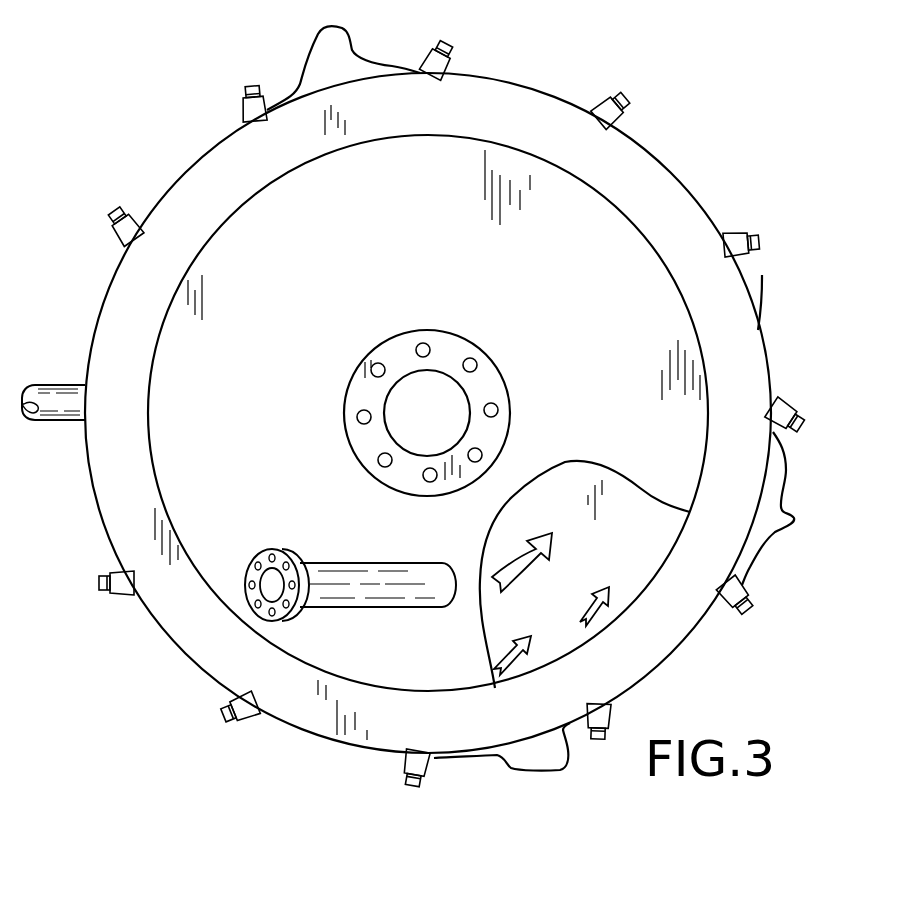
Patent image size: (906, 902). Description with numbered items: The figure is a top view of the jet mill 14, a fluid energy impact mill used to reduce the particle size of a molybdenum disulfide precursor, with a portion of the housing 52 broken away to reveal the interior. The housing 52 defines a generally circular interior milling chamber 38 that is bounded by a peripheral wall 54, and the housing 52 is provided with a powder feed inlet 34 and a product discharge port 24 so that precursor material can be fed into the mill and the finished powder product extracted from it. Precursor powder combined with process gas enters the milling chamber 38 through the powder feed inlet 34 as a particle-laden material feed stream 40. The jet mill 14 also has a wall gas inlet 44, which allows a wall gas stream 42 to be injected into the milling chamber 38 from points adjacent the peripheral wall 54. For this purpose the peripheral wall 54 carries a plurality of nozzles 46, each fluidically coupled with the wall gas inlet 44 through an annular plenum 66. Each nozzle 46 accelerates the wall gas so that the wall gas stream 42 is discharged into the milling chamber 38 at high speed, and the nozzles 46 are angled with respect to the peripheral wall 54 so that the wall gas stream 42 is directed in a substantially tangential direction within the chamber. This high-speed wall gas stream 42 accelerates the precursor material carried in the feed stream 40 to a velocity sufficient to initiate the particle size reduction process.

The jet mill 14 is at (126, 156).
The product discharge port 24 is at (492, 370).
The powder feed inlet 34 is at (333, 564).
The interior milling chamber 38 is at (657, 536).
The particle-laden material feed stream 40 is at (540, 540).
The wall gas stream 42 is at (589, 615).
The wall gas inlet 44 is at (50, 420).
The nozzles 46 is at (462, 397).
The housing 52 is at (676, 166).
The peripheral wall 54 is at (636, 590).
The annular plenum 66 is at (758, 316).